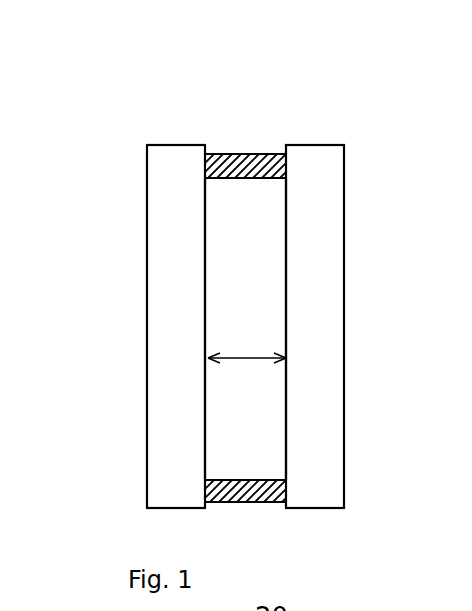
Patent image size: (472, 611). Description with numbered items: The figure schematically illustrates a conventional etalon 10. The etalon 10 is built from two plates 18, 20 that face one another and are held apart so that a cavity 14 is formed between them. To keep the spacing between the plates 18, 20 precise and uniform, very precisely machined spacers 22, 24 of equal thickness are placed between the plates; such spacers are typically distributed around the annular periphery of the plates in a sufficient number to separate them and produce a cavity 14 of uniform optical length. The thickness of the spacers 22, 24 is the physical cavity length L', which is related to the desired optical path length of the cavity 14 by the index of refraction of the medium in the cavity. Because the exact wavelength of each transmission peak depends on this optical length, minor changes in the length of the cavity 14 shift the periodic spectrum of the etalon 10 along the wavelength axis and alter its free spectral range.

The etalon 10 is at (300, 98).
The cavity 14 is at (245, 247).
The plate 18 is at (163, 183).
The plate 20 is at (322, 178).
The spacer 22 is at (232, 165).
The spacer 24 is at (245, 492).
The physical cavity length L' is at (162, 351).